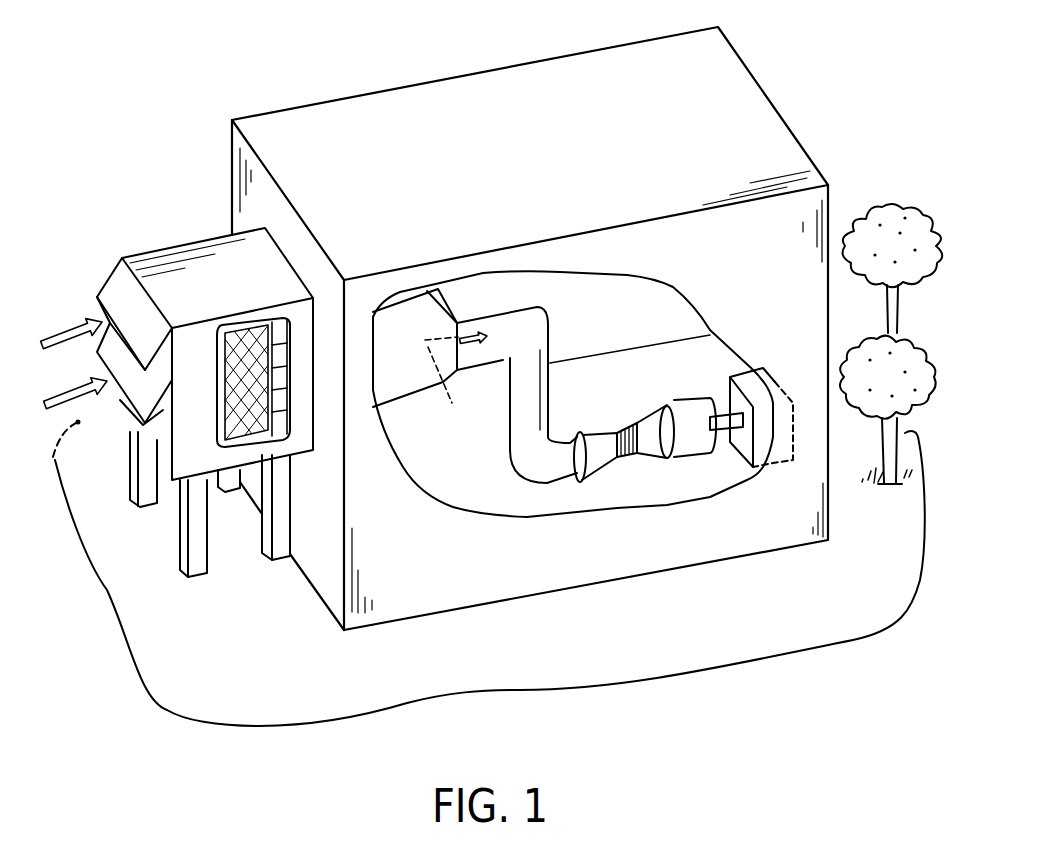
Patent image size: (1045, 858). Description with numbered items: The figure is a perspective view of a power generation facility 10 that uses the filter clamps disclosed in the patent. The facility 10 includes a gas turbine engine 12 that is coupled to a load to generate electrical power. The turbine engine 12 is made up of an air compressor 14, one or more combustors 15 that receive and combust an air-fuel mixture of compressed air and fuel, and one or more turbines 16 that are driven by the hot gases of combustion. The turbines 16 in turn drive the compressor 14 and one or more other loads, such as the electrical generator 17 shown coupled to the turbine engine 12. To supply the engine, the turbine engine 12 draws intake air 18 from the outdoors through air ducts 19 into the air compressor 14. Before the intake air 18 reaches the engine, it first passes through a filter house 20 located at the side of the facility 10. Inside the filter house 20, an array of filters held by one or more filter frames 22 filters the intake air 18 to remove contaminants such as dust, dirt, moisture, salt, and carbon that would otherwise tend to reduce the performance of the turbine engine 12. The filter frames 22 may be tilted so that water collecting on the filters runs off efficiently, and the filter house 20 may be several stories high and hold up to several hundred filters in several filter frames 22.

The power generation facility 10 is at (270, 62).
The gas turbine engine 12 is at (625, 412).
The air compressor 14 is at (600, 463).
The combustor 15 is at (632, 458).
The turbine 16 is at (655, 452).
The electrical generator 17 is at (745, 447).
The intake air 18 is at (78, 332).
The air duct 19 is at (526, 320).
The filter house 20 is at (170, 225).
The filter frame 22 is at (273, 320).